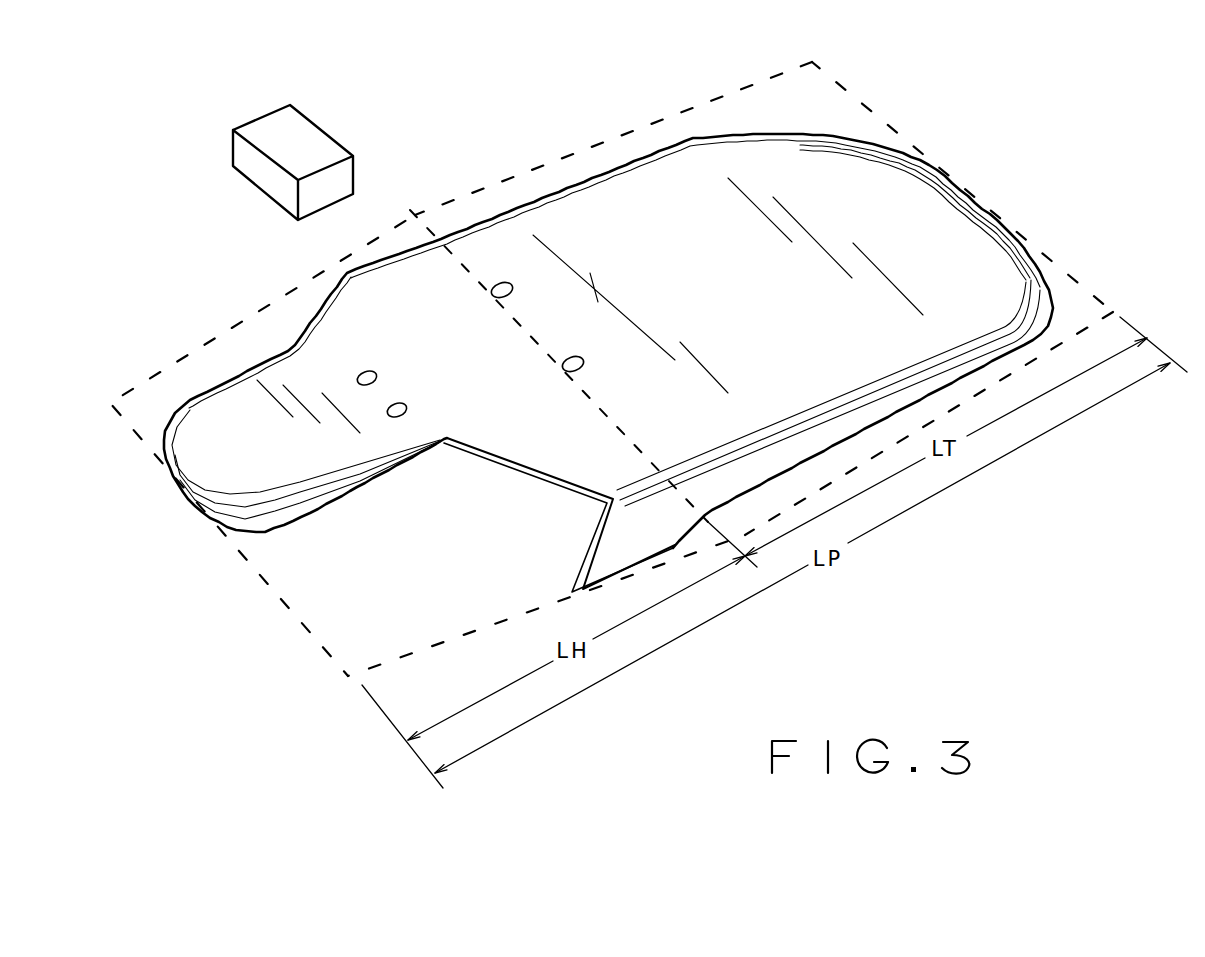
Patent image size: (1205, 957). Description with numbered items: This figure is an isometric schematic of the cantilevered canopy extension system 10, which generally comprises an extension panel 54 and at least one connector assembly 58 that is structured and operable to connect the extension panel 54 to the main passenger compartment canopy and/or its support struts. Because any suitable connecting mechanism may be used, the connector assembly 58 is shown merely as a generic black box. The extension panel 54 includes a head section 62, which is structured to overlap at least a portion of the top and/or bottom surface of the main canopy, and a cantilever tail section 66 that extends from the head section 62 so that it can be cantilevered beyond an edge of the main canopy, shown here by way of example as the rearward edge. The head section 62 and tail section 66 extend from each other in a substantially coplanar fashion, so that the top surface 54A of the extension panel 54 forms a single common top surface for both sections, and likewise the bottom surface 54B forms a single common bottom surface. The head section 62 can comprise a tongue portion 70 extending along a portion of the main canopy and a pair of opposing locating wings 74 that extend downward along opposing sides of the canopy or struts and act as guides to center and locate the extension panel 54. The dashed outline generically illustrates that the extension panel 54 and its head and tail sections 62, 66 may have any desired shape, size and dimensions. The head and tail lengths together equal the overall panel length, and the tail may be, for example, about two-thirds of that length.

The cantilevered canopy extension system 10 is at (457, 100).
The extension panel 54 is at (675, 292).
The top surface of the extension panel 54A is at (598, 197).
The bottom surface of the extension panel 54B is at (477, 467).
The connector assembly 58 is at (286, 160).
The head section 62 is at (383, 637).
The tail section 66 is at (830, 92).
The tongue portion 70 is at (220, 412).
The locating wings 74 is at (642, 543).